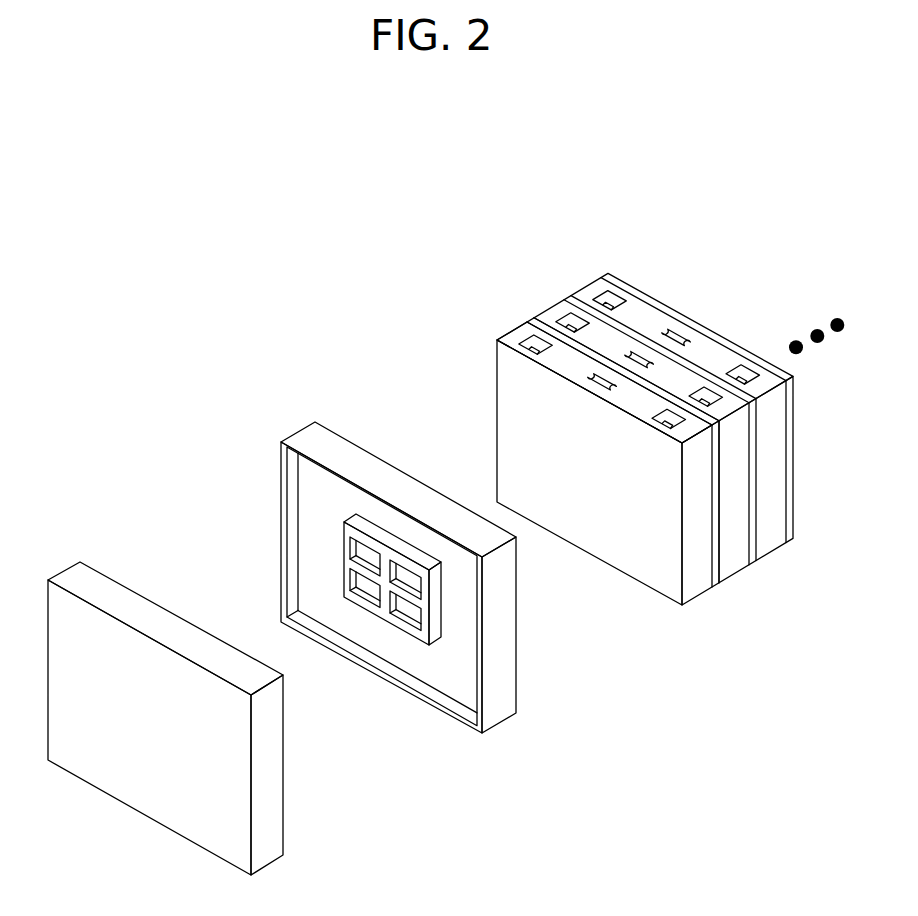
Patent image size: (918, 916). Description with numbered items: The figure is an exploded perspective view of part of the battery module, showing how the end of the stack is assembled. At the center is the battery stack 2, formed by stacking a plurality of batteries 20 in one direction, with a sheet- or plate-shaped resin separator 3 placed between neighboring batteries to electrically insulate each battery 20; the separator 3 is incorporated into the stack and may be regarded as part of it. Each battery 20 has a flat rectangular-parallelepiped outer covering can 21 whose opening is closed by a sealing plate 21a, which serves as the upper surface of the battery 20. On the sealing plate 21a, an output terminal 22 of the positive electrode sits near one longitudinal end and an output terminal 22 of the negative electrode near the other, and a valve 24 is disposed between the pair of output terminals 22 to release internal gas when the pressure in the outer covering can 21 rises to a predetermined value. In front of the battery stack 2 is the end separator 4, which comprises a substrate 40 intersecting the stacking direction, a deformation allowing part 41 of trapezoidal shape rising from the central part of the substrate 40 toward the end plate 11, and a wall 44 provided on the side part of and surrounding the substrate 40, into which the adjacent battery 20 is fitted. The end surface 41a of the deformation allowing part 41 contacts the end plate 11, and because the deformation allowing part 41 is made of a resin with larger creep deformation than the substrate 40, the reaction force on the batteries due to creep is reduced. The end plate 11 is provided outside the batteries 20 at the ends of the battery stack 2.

The battery stack 2 is at (593, 270).
The separator 3 is at (717, 585).
The end separator 4 is at (293, 425).
The end plate 11 is at (62, 568).
The battery 20 is at (496, 333).
The outer covering can 21 is at (613, 543).
The sealing plate 21a is at (516, 338).
The output terminal 22 is at (537, 345).
The valve 24 is at (595, 387).
The substrate 40 is at (467, 642).
The deformation allowing part 41 is at (413, 638).
The end surface 41a is at (366, 602).
The wall 44 is at (505, 715).